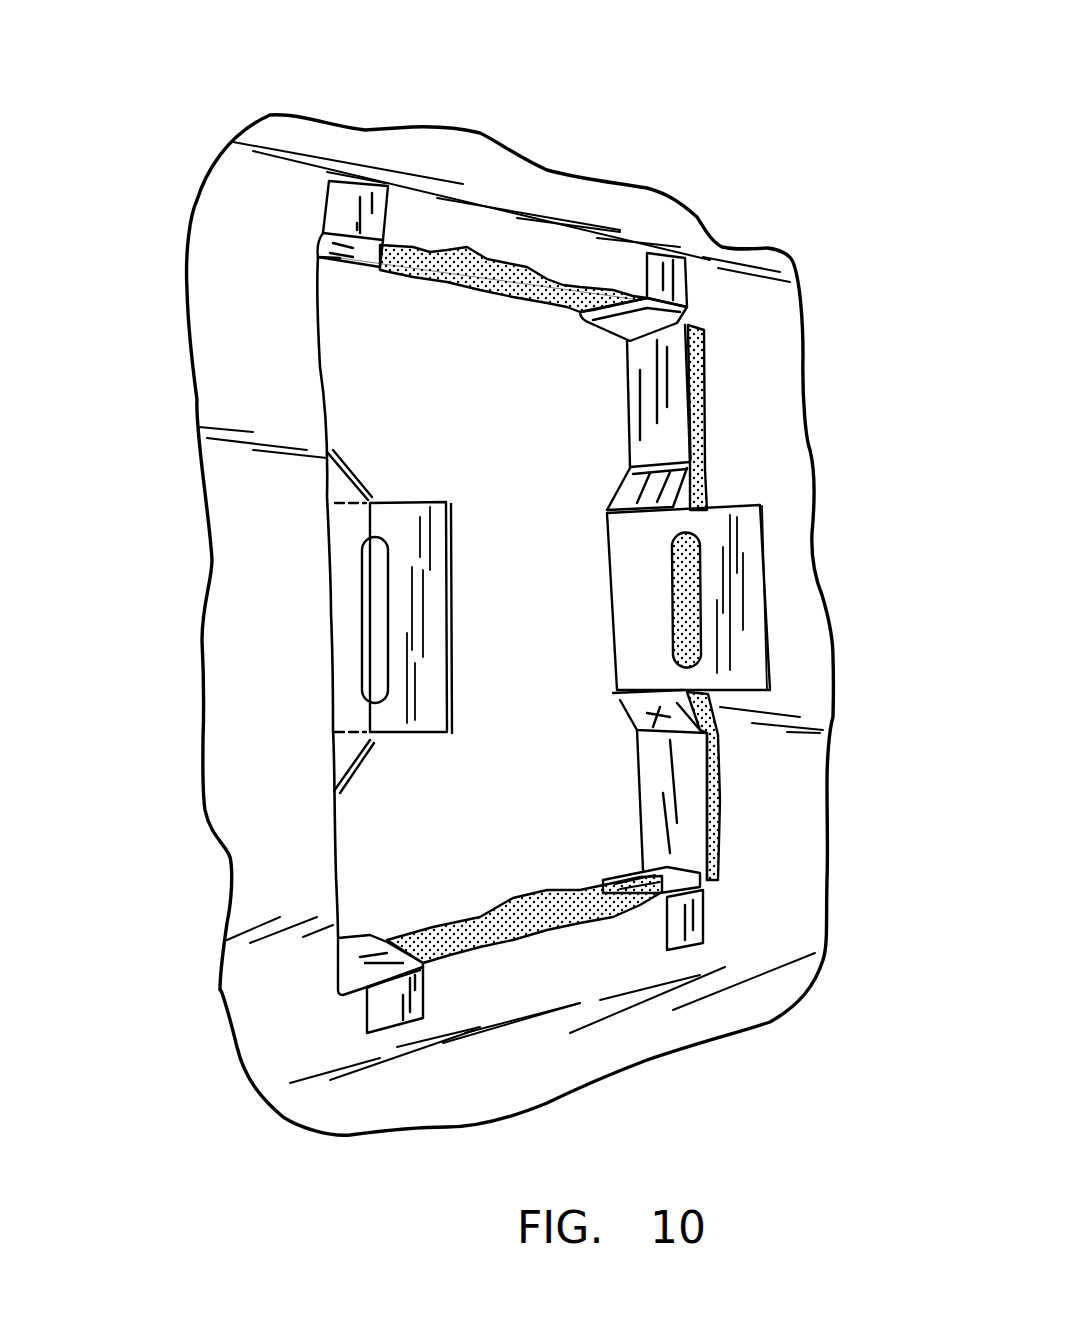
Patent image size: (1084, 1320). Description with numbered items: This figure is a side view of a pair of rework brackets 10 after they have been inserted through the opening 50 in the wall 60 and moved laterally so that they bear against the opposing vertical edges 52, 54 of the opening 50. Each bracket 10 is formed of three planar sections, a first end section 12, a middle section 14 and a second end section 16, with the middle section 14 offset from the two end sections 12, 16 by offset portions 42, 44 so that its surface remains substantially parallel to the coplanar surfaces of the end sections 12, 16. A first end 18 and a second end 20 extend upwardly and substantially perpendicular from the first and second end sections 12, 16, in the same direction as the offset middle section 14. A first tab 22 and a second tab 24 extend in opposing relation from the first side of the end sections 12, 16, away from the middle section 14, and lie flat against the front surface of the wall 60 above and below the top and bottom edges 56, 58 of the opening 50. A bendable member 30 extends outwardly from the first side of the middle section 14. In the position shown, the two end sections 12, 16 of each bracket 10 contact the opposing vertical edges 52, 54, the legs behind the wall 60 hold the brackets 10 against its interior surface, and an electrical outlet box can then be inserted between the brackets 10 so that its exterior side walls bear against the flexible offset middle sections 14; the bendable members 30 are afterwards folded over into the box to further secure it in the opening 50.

The bracket 10 is at (768, 347).
The first end section 12 is at (317, 341).
The middle section 14 is at (657, 610).
The second end section 16 is at (683, 398).
The first end 18 is at (660, 880).
The second end 20 is at (622, 318).
The first tab 22 is at (363, 193).
The second tab 24 is at (700, 258).
The bendable member 30 is at (740, 572).
The offset portion 42 is at (713, 707).
The offset portion 44 is at (640, 483).
The opening 50 is at (487, 396).
The vertical edge 52 is at (327, 688).
The vertical edge 54 is at (720, 813).
The top edge 56 is at (497, 257).
The bottom edge 58 is at (517, 942).
The wall 60 is at (446, 238).